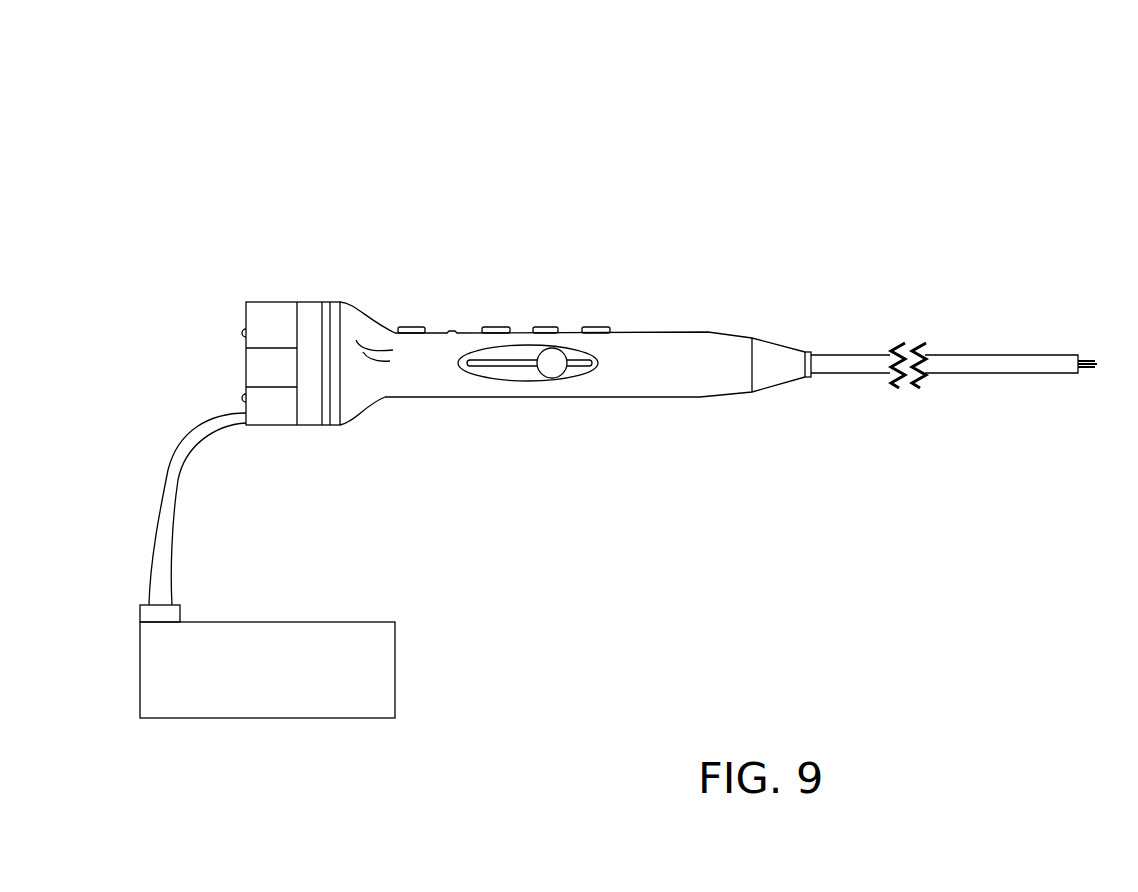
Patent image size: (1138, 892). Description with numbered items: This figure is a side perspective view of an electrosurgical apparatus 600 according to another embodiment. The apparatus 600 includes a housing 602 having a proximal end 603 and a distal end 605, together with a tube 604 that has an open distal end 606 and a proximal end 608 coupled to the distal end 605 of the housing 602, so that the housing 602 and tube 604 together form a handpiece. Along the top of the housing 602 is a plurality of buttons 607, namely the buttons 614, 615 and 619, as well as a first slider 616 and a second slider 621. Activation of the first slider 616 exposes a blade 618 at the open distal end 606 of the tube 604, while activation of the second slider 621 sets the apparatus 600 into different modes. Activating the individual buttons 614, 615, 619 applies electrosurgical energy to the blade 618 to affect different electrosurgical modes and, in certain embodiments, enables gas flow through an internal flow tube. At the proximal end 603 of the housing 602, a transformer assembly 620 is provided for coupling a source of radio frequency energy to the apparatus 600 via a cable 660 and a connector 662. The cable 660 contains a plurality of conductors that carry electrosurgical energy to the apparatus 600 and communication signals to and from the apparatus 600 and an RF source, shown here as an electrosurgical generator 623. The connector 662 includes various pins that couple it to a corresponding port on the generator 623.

The electrosurgical apparatus 600 is at (928, 214).
The housing 602 is at (657, 382).
The proximal end 603 is at (356, 322).
The tube 604 is at (963, 390).
The distal end 605 is at (803, 380).
The open distal end 606 is at (1061, 348).
The buttons 607 is at (580, 262).
The proximal end 608 is at (821, 337).
The button 614 is at (596, 327).
The button 615 is at (547, 327).
The first slider 616 is at (555, 372).
The blade 618 is at (1092, 370).
The button 619 is at (492, 327).
The transformer assembly 620 is at (267, 425).
The second slider 621 is at (412, 327).
The electrosurgical generator 623 is at (395, 645).
The cable 660 is at (173, 477).
The connector 662 is at (180, 613).